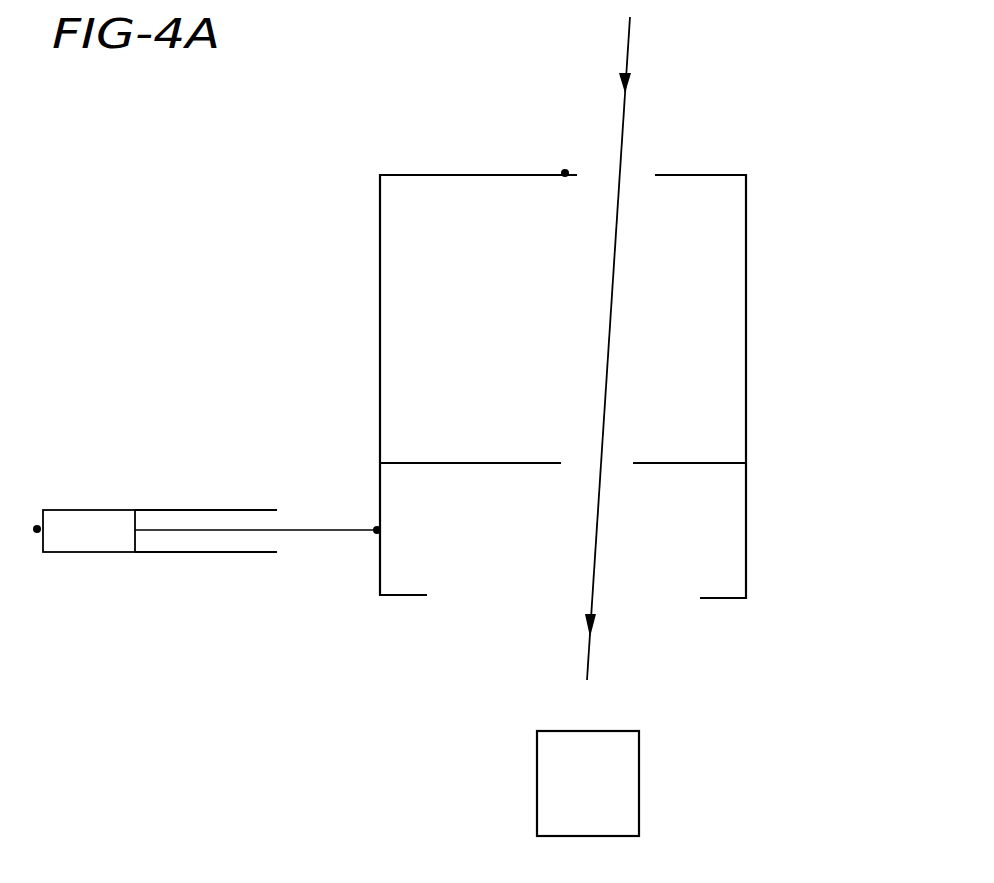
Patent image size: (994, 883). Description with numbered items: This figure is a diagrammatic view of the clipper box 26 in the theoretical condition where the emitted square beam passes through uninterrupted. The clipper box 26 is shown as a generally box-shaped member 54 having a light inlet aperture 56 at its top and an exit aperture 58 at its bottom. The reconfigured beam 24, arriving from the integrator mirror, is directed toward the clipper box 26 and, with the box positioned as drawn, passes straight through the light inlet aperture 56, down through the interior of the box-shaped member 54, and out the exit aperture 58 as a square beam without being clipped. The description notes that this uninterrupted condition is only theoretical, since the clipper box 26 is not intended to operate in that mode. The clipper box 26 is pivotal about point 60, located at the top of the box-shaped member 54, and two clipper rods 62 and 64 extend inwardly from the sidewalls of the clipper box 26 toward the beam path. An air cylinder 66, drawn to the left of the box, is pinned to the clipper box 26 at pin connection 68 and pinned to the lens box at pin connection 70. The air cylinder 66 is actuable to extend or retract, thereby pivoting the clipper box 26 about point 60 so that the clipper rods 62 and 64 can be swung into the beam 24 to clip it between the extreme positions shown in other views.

The reconfigured beam 24 is at (628, 47).
The clipper box 26 is at (318, 381).
The box-shaped member 54 is at (748, 418).
The light inlet aperture 56 is at (655, 175).
The exit aperture 58 is at (426, 597).
The pivot point 60 is at (565, 173).
The clipper rod 62 is at (655, 465).
The clipper rod 64 is at (447, 463).
The air cylinder 66 is at (147, 573).
The pin connection to clipper box 68 is at (377, 530).
The pin connection to lens box 70 is at (37, 528).